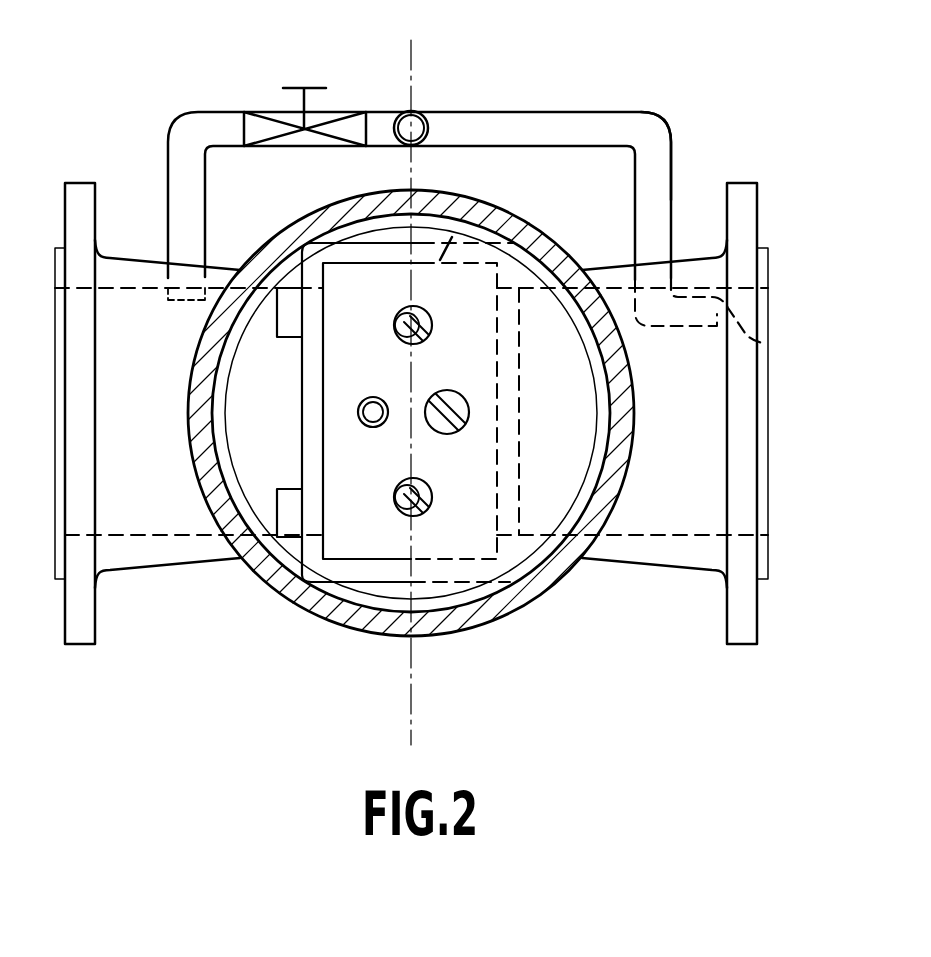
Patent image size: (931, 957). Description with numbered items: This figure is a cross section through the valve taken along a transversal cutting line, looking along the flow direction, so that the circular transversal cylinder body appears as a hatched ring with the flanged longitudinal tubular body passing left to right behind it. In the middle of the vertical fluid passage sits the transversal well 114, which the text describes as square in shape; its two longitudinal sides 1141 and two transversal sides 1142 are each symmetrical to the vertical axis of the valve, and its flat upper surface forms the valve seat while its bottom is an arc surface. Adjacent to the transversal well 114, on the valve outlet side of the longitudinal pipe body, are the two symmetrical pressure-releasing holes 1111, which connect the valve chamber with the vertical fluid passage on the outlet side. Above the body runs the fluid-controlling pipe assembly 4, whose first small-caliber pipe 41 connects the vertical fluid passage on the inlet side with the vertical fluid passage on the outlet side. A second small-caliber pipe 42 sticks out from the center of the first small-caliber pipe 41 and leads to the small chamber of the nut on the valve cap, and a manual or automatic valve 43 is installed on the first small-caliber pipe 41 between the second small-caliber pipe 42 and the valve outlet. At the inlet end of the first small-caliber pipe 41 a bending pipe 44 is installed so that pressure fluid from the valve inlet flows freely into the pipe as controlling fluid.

The fluid-controlling pipe assembly 4 is at (535, 128).
The first small-caliber pipe 41 is at (588, 128).
The second small-caliber pipe 42 is at (407, 110).
The valve 43 is at (268, 128).
The bending pipe 44 is at (770, 344).
The transversal well 114 is at (372, 517).
The pressure-releasing holes 1111 is at (290, 322).
The longitudinal sides 1141 is at (484, 221).
The transversal sides 1142 is at (312, 427).